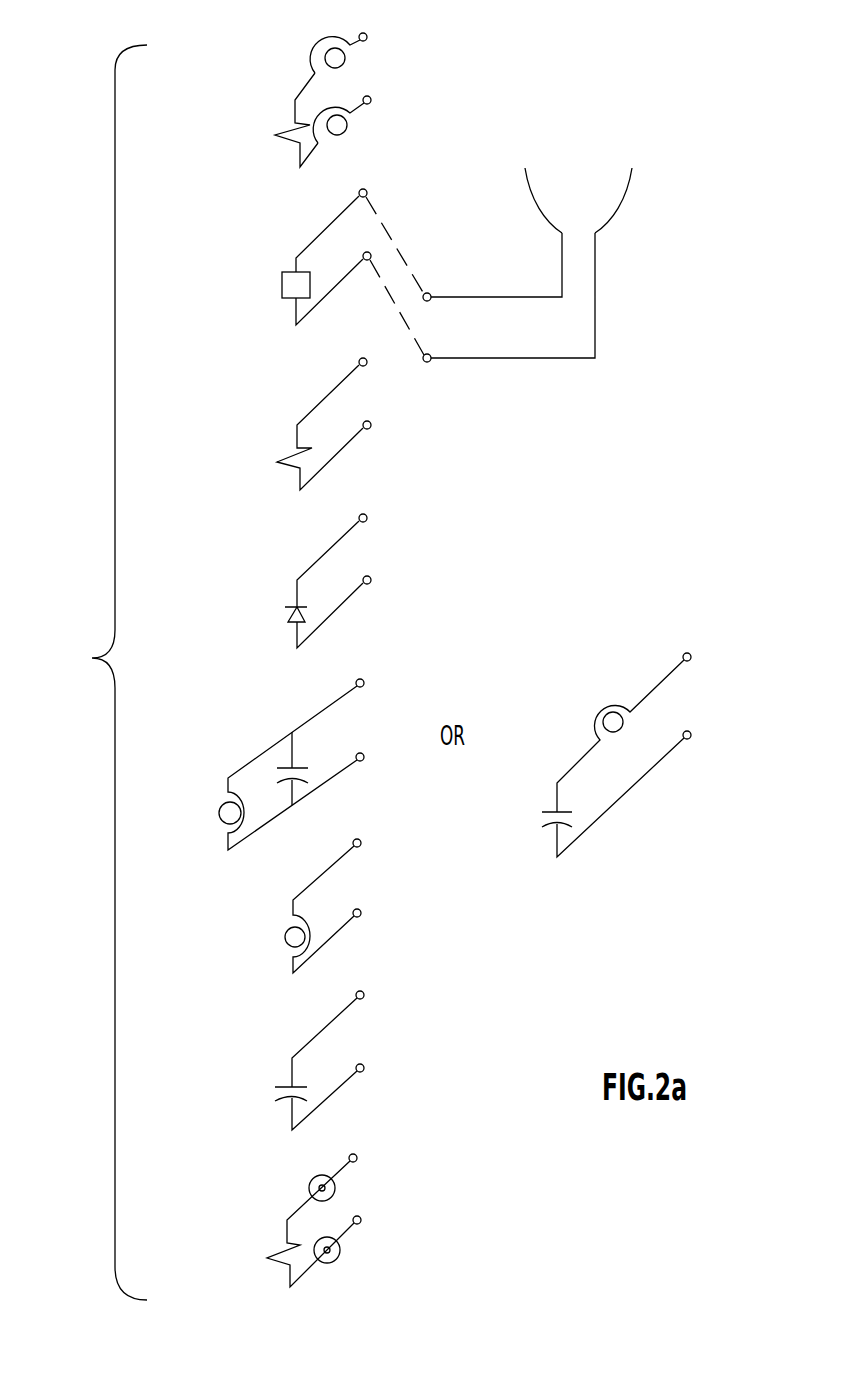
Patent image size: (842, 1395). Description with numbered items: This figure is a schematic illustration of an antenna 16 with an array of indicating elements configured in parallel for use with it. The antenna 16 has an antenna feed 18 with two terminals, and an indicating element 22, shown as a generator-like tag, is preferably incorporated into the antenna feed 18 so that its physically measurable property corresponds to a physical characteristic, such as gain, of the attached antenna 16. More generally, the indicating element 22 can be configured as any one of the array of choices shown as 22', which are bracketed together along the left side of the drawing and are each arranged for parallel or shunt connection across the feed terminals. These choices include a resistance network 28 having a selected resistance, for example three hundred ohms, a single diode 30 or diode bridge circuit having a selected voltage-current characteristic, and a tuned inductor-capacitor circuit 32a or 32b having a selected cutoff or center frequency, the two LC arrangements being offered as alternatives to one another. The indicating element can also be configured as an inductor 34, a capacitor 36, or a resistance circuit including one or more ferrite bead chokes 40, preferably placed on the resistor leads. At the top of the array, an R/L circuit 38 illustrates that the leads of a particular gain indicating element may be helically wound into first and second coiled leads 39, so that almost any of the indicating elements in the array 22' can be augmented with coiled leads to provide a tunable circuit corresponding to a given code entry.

The antenna 16 is at (659, 201).
The antenna feed 18 is at (438, 380).
The indicating element 22 is at (304, 257).
The array of indicating element choices 22' is at (98, 672).
The resistance network 28 is at (248, 458).
The diode 30 is at (258, 609).
The tuned inductor-capacitor circuit 32a is at (221, 756).
The tuned inductor-capacitor circuit 32b is at (578, 707).
The inductor 34 is at (256, 942).
The capacitor 36 is at (256, 1090).
The R/L circuit 38 is at (262, 116).
The coiled leads 39 is at (298, 47).
The ferrite bead chokes 40 is at (288, 1180).